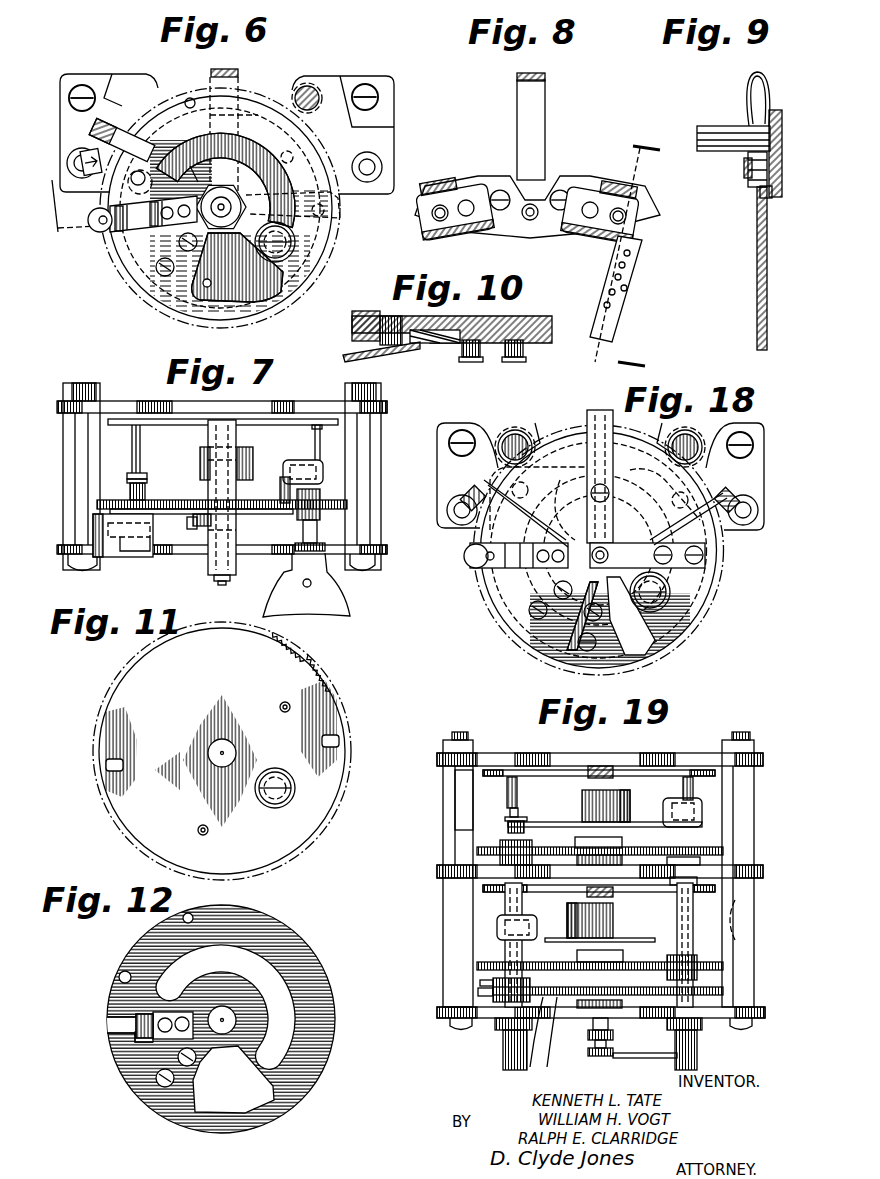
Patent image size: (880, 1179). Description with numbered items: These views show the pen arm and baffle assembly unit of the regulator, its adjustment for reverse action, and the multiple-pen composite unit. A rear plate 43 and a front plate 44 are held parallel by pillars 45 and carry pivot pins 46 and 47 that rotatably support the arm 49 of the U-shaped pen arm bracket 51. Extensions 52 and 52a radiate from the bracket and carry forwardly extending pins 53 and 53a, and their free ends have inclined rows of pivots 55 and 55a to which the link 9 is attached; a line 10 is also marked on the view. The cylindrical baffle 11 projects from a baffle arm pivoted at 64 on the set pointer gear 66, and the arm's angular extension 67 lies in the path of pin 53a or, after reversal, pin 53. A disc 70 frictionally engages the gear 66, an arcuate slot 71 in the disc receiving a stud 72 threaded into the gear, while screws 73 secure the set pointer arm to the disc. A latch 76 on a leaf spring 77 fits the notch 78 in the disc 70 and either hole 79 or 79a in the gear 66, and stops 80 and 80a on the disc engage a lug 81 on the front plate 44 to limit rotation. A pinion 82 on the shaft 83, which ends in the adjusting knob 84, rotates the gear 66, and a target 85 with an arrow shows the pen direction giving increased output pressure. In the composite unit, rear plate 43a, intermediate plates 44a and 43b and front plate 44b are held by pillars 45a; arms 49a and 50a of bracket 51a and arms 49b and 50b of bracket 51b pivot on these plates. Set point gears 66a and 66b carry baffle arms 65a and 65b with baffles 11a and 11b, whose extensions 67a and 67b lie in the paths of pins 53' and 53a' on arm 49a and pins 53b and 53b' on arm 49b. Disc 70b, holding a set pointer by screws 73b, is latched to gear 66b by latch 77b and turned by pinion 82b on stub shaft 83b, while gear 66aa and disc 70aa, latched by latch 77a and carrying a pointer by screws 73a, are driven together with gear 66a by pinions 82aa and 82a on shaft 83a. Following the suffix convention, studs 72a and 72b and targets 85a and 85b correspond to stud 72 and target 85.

In FIG. 8, the link 9 is at (612, 306).
In FIG. 9, the link 9 is at (767, 246).
In FIG. 6, the section line 10 is at (108, 189).
In FIG. 7, the baffle 11 is at (284, 478).
In FIG. 19, the baffle 11a is at (634, 798).
In FIG. 19, the baffle 11b is at (566, 914).
In FIG. 7, the rear plate 43 is at (196, 396).
In FIG. 19, the rear plate 43a is at (672, 754).
In FIG. 19, the plate 43b is at (716, 889).
In FIG. 7, the front plate 44 is at (270, 556).
In FIG. 19, the plate 44a is at (763, 870).
In FIG. 19, the front plate 44b is at (750, 1020).
In FIG. 7, the pillars 45 is at (78, 438).
In FIG. 19, the pillars 45a is at (455, 782).
In FIG. 8, the pivot pin 46 is at (530, 221).
In FIG. 7, the pivot pin 47 is at (221, 586).
In FIG. 6, the arm 49 is at (240, 118).
In FIG. 8, the arm 49 is at (540, 136).
In FIG. 19, the arm 49a is at (602, 768).
In FIG. 19, the arm 49b is at (612, 896).
In FIG. 18, the arm 50a is at (645, 472).
In FIG. 19, the arm 50a is at (612, 1058).
In FIG. 18, the arm 50b is at (600, 520).
In FIG. 19, the arm 50b is at (614, 1036).
In FIG. 6, the pen arm bracket 51 is at (234, 69).
In FIG. 8, the pen arm bracket 51 is at (535, 73).
In FIG. 7, the pen arm bracket 51 is at (218, 458).
In FIG. 18, the pen arm bracket 51a is at (590, 414).
In FIG. 18, the pen arm bracket 51b is at (596, 472).
In FIG. 8, the extension 52 is at (425, 224).
In FIG. 7, the extension 52 is at (146, 426).
In FIG. 8, the extension 52a is at (648, 236).
In FIG. 9, the extension 52a is at (774, 192).
In FIG. 7, the extension 52a is at (312, 430).
In FIG. 8, the pin 53 is at (422, 192).
In FIG. 7, the pin 53 is at (296, 443).
In FIG. 8, the pin 53a is at (648, 196).
In FIG. 9, the pin 53a is at (792, 142).
In FIG. 7, the pin 53a is at (201, 461).
In FIG. 19, the pin 53' is at (526, 792).
In FIG. 19, the pin 53a' is at (741, 790).
In FIG. 19, the pin 53b is at (463, 945).
In FIG. 19, the pin 53b' is at (739, 945).
In FIG. 8, the pivots 55 is at (460, 236).
In FIG. 8, the pivots 55a is at (600, 240).
In FIG. 9, the pivots 55a is at (770, 172).
In FIG. 7, the pivot 64 is at (134, 464).
In FIG. 19, the baffle arm 65a is at (590, 822).
In FIG. 19, the baffle arm 65b is at (601, 922).
In FIG. 10, the set pointer gear 66 is at (492, 315).
In FIG. 7, the set pointer gear 66 is at (158, 502).
In FIG. 11, the set pointer gear 66 is at (322, 713).
In FIG. 19, the set point gear 66a is at (724, 851).
In FIG. 19, the set point gear 66b is at (580, 962).
In FIG. 19, the gear 66aa is at (540, 1043).
In FIG. 7, the angular extension 67 is at (314, 478).
In FIG. 19, the extension 67a is at (702, 818).
In FIG. 19, the extension 67b is at (497, 926).
In FIG. 6, the disc 70 is at (152, 280).
In FIG. 10, the disc 70 is at (530, 346).
In FIG. 7, the disc 70 is at (172, 516).
In FIG. 12, the disc 70 is at (283, 942).
In FIG. 18, the disc 70b is at (640, 666).
In FIG. 19, the disc 70b is at (724, 991).
In FIG. 18, the disc 70aa is at (560, 652).
In FIG. 19, the disc 70aa is at (560, 1040).
In FIG. 6, the arcuate slot 71 is at (266, 160).
In FIG. 12, the arcuate slot 71 is at (282, 988).
In FIG. 6, the stud 72 is at (295, 251).
In FIG. 18, the screw 72a is at (671, 598).
In FIG. 18, the screw 72b is at (553, 592).
In FIG. 6, the screws 73 is at (178, 249).
In FIG. 12, the screws 73 is at (196, 1090).
In FIG. 18, the screws 73a is at (548, 620).
In FIG. 18, the screws 73b is at (631, 616).
In FIG. 10, the latch 76 is at (368, 311).
In FIG. 6, the leaf spring 77 is at (98, 231).
In FIG. 10, the leaf spring 77 is at (376, 356).
In FIG. 12, the leaf spring 77 is at (187, 1010).
In FIG. 18, the latch 77a is at (478, 566).
In FIG. 18, the latch 77b is at (505, 632).
In FIG. 12, the notch 78 is at (124, 1034).
In FIG. 10, the hole 79 is at (392, 316).
In FIG. 11, the hole 79 is at (108, 769).
In FIG. 11, the hole 79a is at (341, 741).
In FIG. 6, the stop 80 is at (131, 181).
In FIG. 12, the stop 80 is at (119, 976).
In FIG. 6, the stop 80a is at (190, 98).
In FIG. 7, the stop 80a is at (189, 530).
In FIG. 12, the stop 80a is at (194, 919).
In FIG. 6, the lug 81 is at (148, 150).
In FIG. 7, the lug 81 is at (150, 537).
In FIG. 19, the lug 81 is at (478, 986).
In FIG. 7, the pinion 82 is at (322, 502).
In FIG. 19, the pinion 82a is at (505, 832).
In FIG. 19, the pinion 82b is at (720, 946).
In FIG. 19, the pinion 82aa is at (500, 1012).
In FIG. 7, the shaft 83 is at (305, 528).
In FIG. 18, the shaft 83a is at (512, 430).
In FIG. 19, the shaft 83a is at (508, 1062).
In FIG. 18, the stub shaft 83b is at (702, 446).
In FIG. 19, the stub shaft 83b is at (700, 1054).
In FIG. 7, the adjusting knob 84 is at (336, 606).
In FIG. 6, the target 85 is at (82, 160).
In FIG. 7, the target 85 is at (132, 490).
In FIG. 18, the spring clip 85a is at (470, 546).
In FIG. 19, the spring clip 85a is at (496, 856).
In FIG. 18, the spring clip 85b is at (744, 522).
In FIG. 19, the spring clip 85b is at (700, 966).